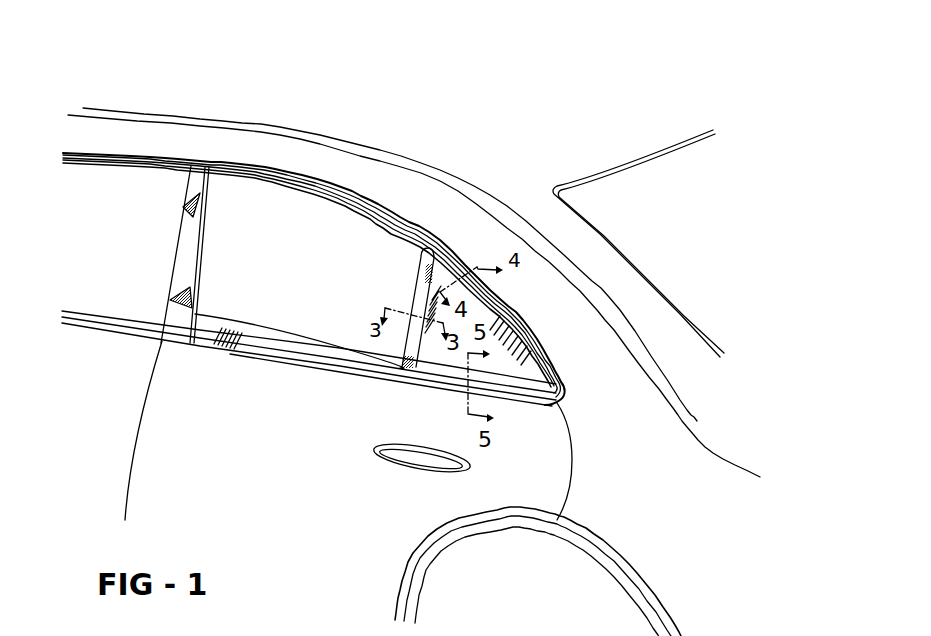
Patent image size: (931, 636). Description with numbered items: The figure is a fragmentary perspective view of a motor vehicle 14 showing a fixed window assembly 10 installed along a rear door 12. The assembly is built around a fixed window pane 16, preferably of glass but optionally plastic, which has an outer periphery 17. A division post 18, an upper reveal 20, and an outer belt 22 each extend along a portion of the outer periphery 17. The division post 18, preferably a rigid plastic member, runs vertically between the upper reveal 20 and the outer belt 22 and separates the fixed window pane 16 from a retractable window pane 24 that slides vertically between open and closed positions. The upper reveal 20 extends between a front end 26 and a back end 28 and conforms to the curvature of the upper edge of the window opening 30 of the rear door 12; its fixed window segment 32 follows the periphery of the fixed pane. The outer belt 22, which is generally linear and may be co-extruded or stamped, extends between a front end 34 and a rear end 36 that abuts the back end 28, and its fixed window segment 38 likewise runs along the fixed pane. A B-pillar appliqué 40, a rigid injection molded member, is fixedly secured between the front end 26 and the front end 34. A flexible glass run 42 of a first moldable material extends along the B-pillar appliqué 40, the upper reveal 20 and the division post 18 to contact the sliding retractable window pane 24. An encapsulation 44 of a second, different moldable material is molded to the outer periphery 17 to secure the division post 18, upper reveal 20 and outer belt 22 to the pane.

The fixed window assembly 10 is at (528, 310).
The rear door 12 is at (552, 470).
The motor vehicle 14 is at (151, 111).
The fixed window pane 16 is at (531, 380).
The outer periphery 17 is at (415, 381).
The division post 18 is at (419, 294).
The upper reveal 20 is at (442, 243).
The outer belt 22 is at (337, 372).
The retractable window pane 24 is at (247, 318).
The front end 26 is at (214, 162).
The back end 28 is at (646, 335).
The window opening 30 is at (350, 208).
The fixed window segment 32 is at (576, 324).
The front end 34 is at (187, 347).
The rear end 36 is at (570, 426).
The fixed window segment 38 is at (450, 381).
The B-pillar appliqué 40 is at (172, 254).
The glass run 42 is at (202, 220).
The encapsulation 44 is at (509, 211).